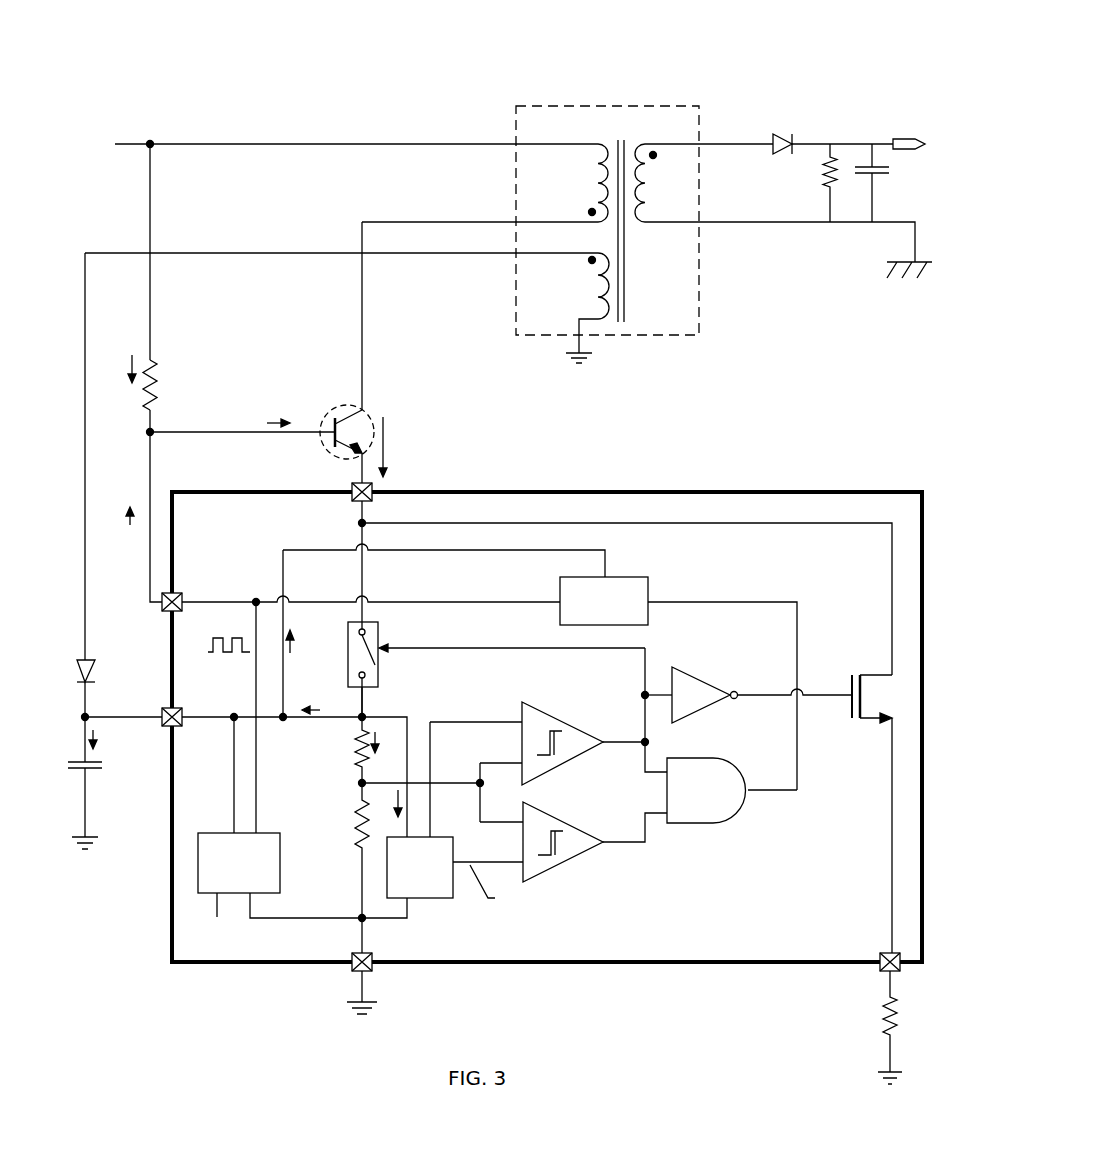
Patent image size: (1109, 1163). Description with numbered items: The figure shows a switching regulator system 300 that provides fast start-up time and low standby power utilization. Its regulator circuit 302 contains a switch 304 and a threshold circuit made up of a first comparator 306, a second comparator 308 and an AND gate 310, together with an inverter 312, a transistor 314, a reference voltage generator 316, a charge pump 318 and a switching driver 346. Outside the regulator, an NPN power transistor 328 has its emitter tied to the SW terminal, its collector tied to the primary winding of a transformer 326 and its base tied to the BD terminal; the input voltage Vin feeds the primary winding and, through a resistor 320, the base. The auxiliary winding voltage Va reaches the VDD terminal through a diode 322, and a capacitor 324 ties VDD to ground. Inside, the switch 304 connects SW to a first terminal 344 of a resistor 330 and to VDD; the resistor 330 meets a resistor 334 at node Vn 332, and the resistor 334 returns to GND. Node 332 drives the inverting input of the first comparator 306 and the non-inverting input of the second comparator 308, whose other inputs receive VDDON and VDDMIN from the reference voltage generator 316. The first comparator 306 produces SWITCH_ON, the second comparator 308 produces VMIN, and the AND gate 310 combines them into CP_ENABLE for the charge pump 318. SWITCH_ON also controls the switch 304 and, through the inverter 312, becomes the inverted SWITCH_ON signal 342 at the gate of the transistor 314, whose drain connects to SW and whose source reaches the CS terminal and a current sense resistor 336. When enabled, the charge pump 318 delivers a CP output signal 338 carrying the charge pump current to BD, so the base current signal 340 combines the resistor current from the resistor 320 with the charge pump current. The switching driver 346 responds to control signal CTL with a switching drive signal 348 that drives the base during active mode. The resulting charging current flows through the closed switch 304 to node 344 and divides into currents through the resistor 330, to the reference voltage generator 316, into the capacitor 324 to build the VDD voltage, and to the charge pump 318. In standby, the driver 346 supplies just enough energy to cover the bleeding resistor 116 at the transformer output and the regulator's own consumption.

The switching regulator system 300 is at (814, 60).
The regulator circuit 302 is at (705, 492).
The switch 304 is at (384, 630).
The first comparator 306 is at (543, 710).
The second comparator 308 is at (542, 812).
The AND gate 310 is at (685, 758).
The inverter 312 is at (687, 673).
The transistor 314 is at (877, 670).
The reference voltage generator 316 is at (423, 900).
The charge pump 318 is at (628, 577).
The resistor 320 is at (153, 363).
The diode 322 is at (88, 672).
The capacitor 324 is at (93, 773).
The transformer 326 is at (643, 106).
The power transistor 328 is at (367, 417).
The resistor 330 is at (353, 737).
The node (Vn) 332 is at (358, 788).
The resistor 334 is at (360, 835).
The current sense resistor 336 is at (888, 1033).
The CP output signal 338 is at (470, 602).
The base current signal 340 is at (293, 432).
The inverted SWITCH_ON signal 342 is at (820, 698).
The first terminal of resistor 330 (node) 344 is at (372, 706).
The switching driver 346 is at (282, 890).
The switching drive signal 348 is at (255, 672).
The bleeding resistor 116 is at (825, 182).